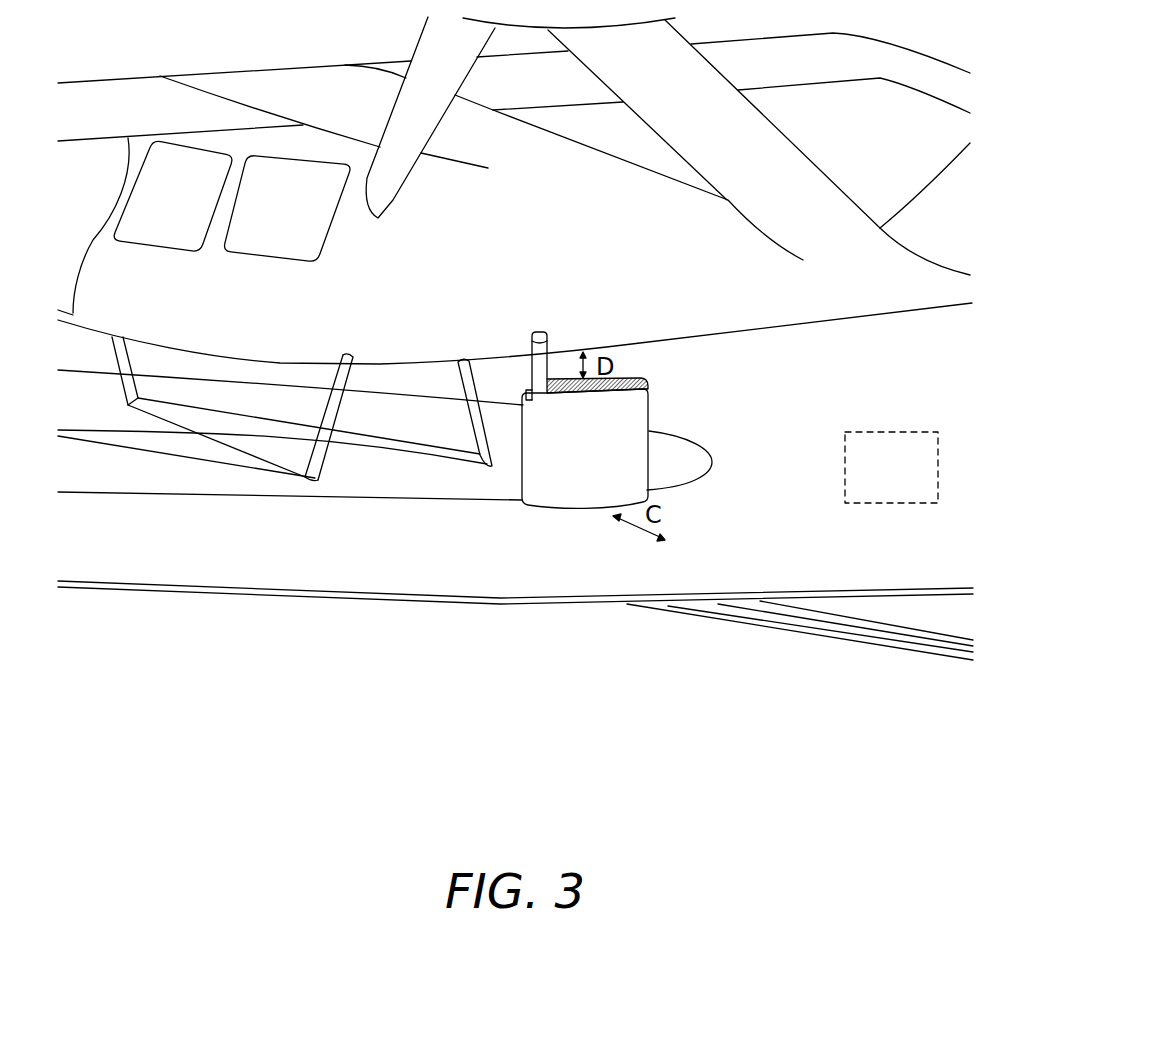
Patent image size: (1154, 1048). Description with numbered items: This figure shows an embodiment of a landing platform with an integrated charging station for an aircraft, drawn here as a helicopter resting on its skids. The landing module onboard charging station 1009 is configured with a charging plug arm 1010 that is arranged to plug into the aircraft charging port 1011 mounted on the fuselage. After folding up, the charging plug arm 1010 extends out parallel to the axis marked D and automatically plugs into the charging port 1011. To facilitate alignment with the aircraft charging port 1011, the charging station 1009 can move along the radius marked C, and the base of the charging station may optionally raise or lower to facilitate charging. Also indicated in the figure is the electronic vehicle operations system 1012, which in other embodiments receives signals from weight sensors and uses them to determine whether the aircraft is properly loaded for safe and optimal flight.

The landing module onboard charging station 1009 is at (532, 508).
The charging plug arm 1010 is at (523, 390).
The aircraft charging port 1011 is at (536, 333).
The electronic vehicle operations system 1012 is at (918, 477).